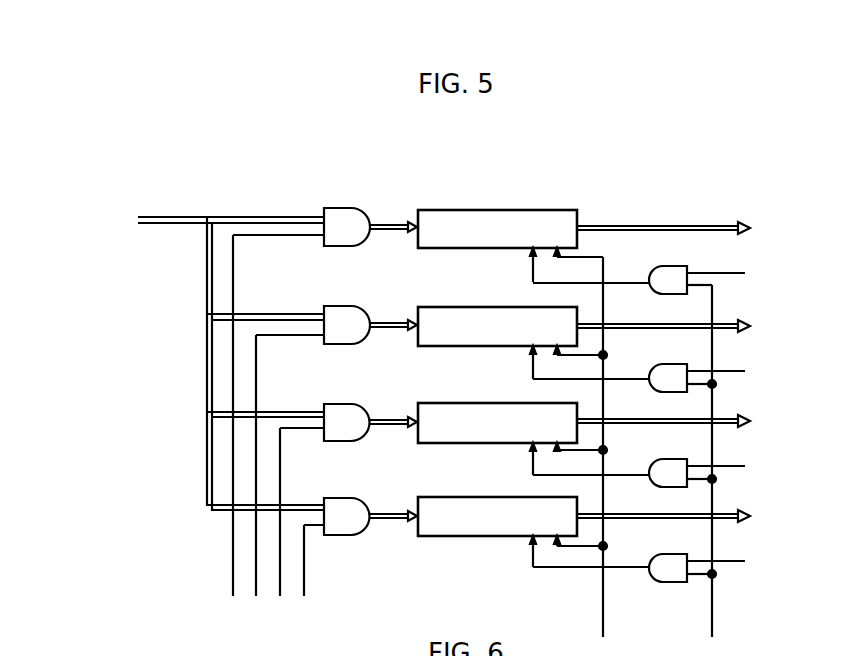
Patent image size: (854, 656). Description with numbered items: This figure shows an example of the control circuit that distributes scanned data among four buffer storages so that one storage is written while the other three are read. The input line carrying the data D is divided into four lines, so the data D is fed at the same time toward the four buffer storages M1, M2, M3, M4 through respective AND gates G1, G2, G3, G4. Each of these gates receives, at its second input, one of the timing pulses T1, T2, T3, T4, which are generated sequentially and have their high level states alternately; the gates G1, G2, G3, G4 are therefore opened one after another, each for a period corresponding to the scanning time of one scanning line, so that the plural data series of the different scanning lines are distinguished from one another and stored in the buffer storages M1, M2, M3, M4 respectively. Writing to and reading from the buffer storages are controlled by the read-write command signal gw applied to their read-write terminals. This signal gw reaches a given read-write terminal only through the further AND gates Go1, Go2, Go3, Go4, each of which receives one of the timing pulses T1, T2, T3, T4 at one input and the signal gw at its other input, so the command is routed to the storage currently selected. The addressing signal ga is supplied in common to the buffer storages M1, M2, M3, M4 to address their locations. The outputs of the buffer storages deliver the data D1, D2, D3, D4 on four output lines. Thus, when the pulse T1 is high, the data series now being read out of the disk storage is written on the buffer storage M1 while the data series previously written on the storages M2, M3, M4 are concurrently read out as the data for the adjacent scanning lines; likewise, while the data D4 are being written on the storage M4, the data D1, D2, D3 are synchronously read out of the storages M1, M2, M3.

The data D is at (170, 216).
The AND gate G1 is at (343, 237).
The AND gate G2 is at (343, 335).
The AND gate G3 is at (343, 432).
The AND gate G4 is at (343, 526).
The buffer storage M1 is at (510, 246).
The buffer storage M2 is at (510, 343).
The buffer storage M3 is at (510, 439).
The buffer storage M4 is at (510, 532).
The further AND gate Go1 is at (658, 275).
The further AND gate Go2 is at (658, 373).
The further AND gate Go3 is at (658, 468).
The further AND gate Go4 is at (658, 563).
The timing pulse T1 is at (498, 425).
The timing pulse T2 is at (510, 475).
The timing pulse T3 is at (522, 522).
The timing pulse T4 is at (534, 570).
The data D1 is at (682, 230).
The data D2 is at (682, 328).
The data D3 is at (682, 423).
The data D4 is at (682, 518).
The addressing signal ga is at (608, 456).
The read-write command signal gw is at (716, 470).